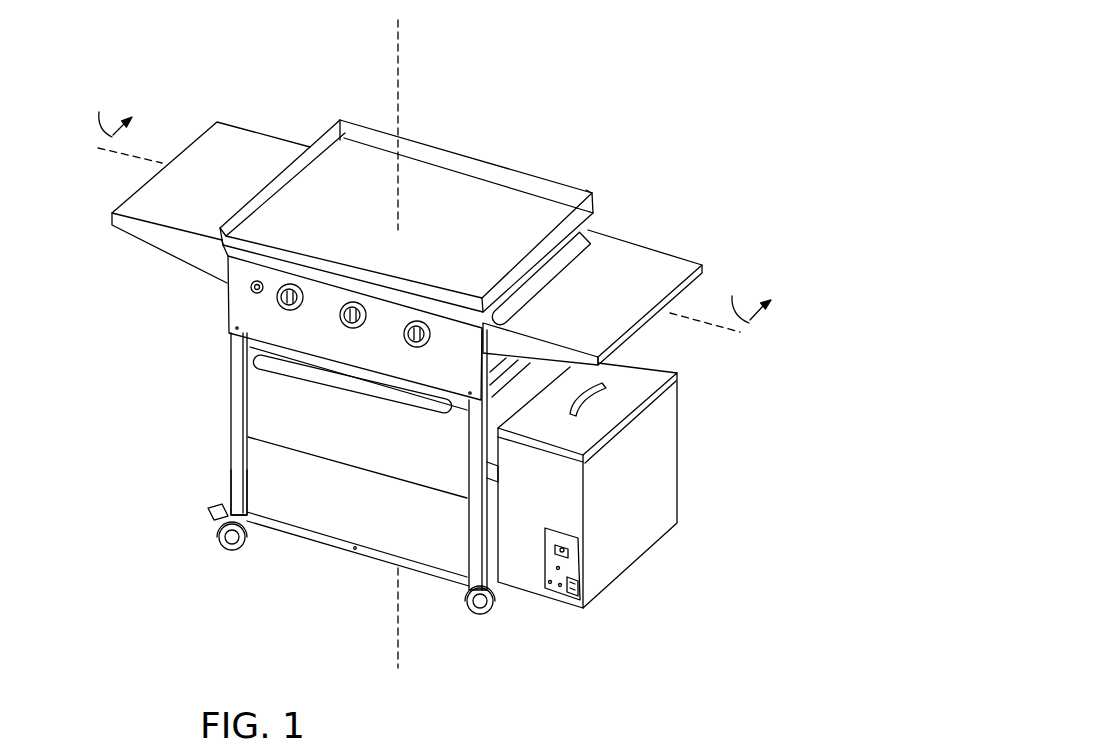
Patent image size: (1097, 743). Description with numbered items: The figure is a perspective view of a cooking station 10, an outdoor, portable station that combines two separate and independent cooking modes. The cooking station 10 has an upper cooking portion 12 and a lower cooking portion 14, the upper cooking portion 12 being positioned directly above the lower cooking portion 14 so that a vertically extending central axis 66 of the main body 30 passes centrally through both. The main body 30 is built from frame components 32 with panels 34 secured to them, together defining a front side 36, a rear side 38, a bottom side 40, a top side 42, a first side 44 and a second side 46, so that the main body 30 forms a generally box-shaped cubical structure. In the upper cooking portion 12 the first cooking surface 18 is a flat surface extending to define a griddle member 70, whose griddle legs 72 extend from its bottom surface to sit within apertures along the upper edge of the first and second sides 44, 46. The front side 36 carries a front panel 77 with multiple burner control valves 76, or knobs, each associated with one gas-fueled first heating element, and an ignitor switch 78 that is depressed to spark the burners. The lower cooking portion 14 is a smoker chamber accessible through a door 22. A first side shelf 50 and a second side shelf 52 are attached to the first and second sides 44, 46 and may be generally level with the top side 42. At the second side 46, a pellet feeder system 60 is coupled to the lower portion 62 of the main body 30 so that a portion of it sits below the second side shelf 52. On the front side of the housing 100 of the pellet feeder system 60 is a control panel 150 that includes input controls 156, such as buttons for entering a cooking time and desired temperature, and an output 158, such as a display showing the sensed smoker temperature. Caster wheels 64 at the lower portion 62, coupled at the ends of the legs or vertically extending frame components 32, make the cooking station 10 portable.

The cooking station 10 is at (752, 122).
The upper cooking portion 12 is at (200, 298).
The lower cooking portion 14 is at (184, 382).
The first cooking surface 18 is at (335, 160).
The door 22 is at (252, 423).
The main body 30 is at (217, 425).
The frame components 32 is at (455, 544).
The panels 34 is at (264, 513).
The front side 36 is at (141, 582).
The rear side 38 is at (622, 154).
The bottom side 40 is at (327, 588).
The top side 42 is at (472, 120).
The first side 44 is at (111, 276).
The second side 46 is at (738, 360).
The first side shelf 50 is at (230, 122).
The second side shelf 52 is at (668, 255).
The pellet feeder system 60 is at (688, 478).
The lower portion 62 is at (217, 493).
The caster wheels 64 is at (482, 612).
The central axis 66 is at (396, 45).
The griddle member 70 is at (536, 165).
The griddle legs 72 is at (520, 287).
The burner control valves 76 is at (418, 347).
The front panel 77 is at (252, 315).
The ignitor switch 78 is at (263, 292).
The housing 100 is at (662, 525).
The control panel 150 is at (570, 570).
The input controls 156 is at (578, 617).
The output 158 is at (563, 550).